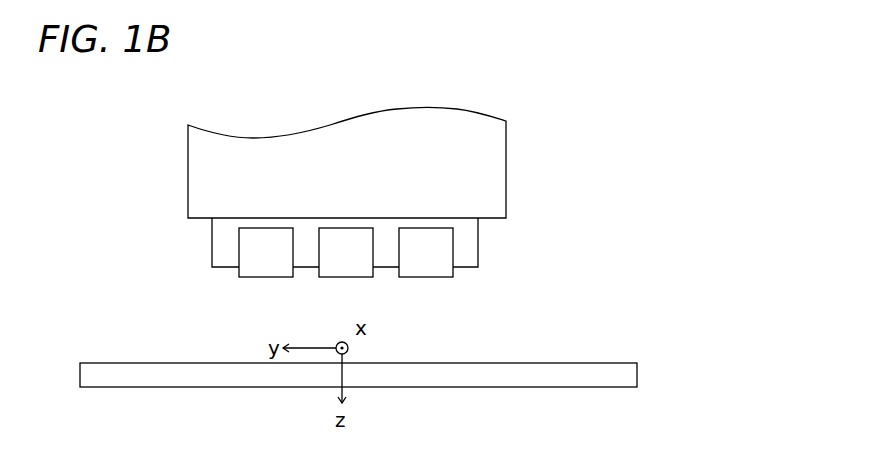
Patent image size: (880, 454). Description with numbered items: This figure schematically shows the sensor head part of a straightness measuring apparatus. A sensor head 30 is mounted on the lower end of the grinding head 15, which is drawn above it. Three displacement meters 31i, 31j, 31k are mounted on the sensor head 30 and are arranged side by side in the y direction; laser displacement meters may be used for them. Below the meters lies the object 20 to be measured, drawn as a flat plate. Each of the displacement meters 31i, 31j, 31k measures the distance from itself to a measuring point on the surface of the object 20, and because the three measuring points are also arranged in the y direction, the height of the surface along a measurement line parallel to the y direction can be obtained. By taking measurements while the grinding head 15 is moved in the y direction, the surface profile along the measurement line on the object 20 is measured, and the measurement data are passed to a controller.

The grinding head 15 is at (389, 163).
The sensor head 30 is at (388, 242).
The displacement meter 31i is at (220, 264).
The displacement meter 31j is at (414, 277).
The displacement meter 31k is at (487, 264).
The object to be measured 20 is at (402, 367).